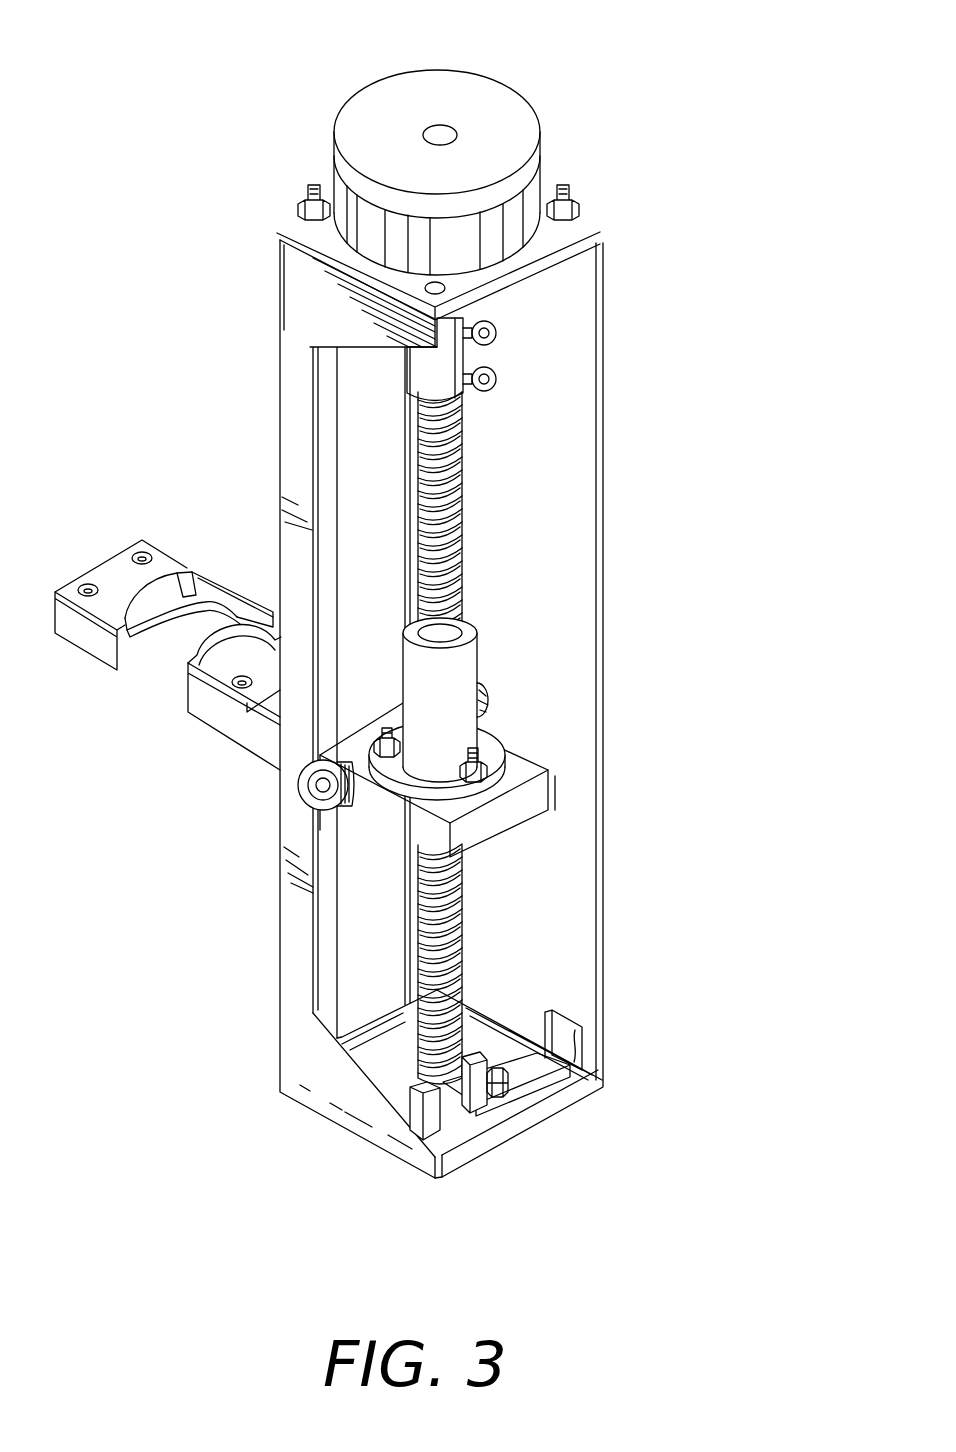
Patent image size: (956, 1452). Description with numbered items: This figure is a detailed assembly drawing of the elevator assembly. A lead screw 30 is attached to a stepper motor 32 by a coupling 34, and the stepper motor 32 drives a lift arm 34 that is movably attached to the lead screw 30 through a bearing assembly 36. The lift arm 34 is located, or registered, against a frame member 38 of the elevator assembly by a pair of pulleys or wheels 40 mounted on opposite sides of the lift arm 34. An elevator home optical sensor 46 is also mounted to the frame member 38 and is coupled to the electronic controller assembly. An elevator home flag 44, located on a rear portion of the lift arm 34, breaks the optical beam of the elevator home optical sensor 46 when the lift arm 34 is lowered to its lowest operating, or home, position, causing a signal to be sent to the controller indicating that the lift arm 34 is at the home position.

The lead screw 30 is at (462, 550).
The stepper motor 32 is at (503, 100).
The lift arm 34 is at (407, 347).
The bearing assembly 36 is at (500, 745).
The frame member 38 is at (290, 915).
The pulleys or wheels 40 is at (487, 690).
The elevator home flag 44 is at (468, 883).
The elevator home optical sensor 46 is at (537, 1073).